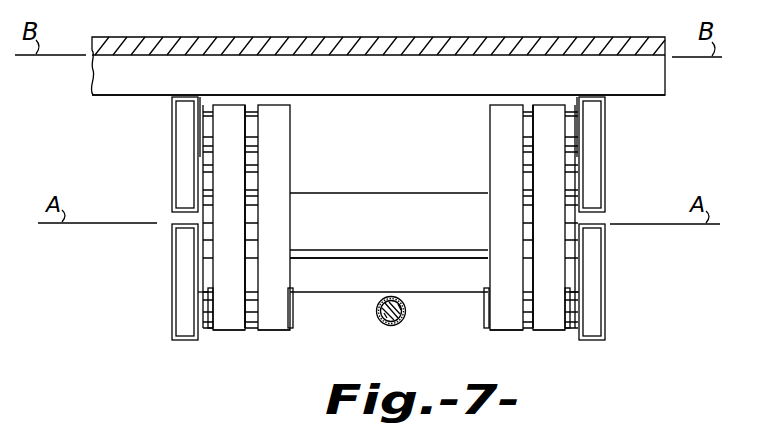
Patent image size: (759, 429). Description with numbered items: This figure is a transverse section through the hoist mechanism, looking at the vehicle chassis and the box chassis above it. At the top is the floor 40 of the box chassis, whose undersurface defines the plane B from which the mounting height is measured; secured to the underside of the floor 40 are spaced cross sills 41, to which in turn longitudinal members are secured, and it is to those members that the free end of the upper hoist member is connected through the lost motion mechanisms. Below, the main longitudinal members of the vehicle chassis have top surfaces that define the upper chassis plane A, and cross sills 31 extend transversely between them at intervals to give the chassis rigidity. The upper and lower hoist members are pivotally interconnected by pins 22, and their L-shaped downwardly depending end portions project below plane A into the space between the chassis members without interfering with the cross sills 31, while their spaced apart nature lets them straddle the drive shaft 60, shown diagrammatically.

The pins 22 is at (293, 305).
The cross sills 31 is at (378, 280).
The floor 40 is at (368, 43).
The cross sills 41 is at (425, 68).
The drive shaft 60 is at (405, 313).